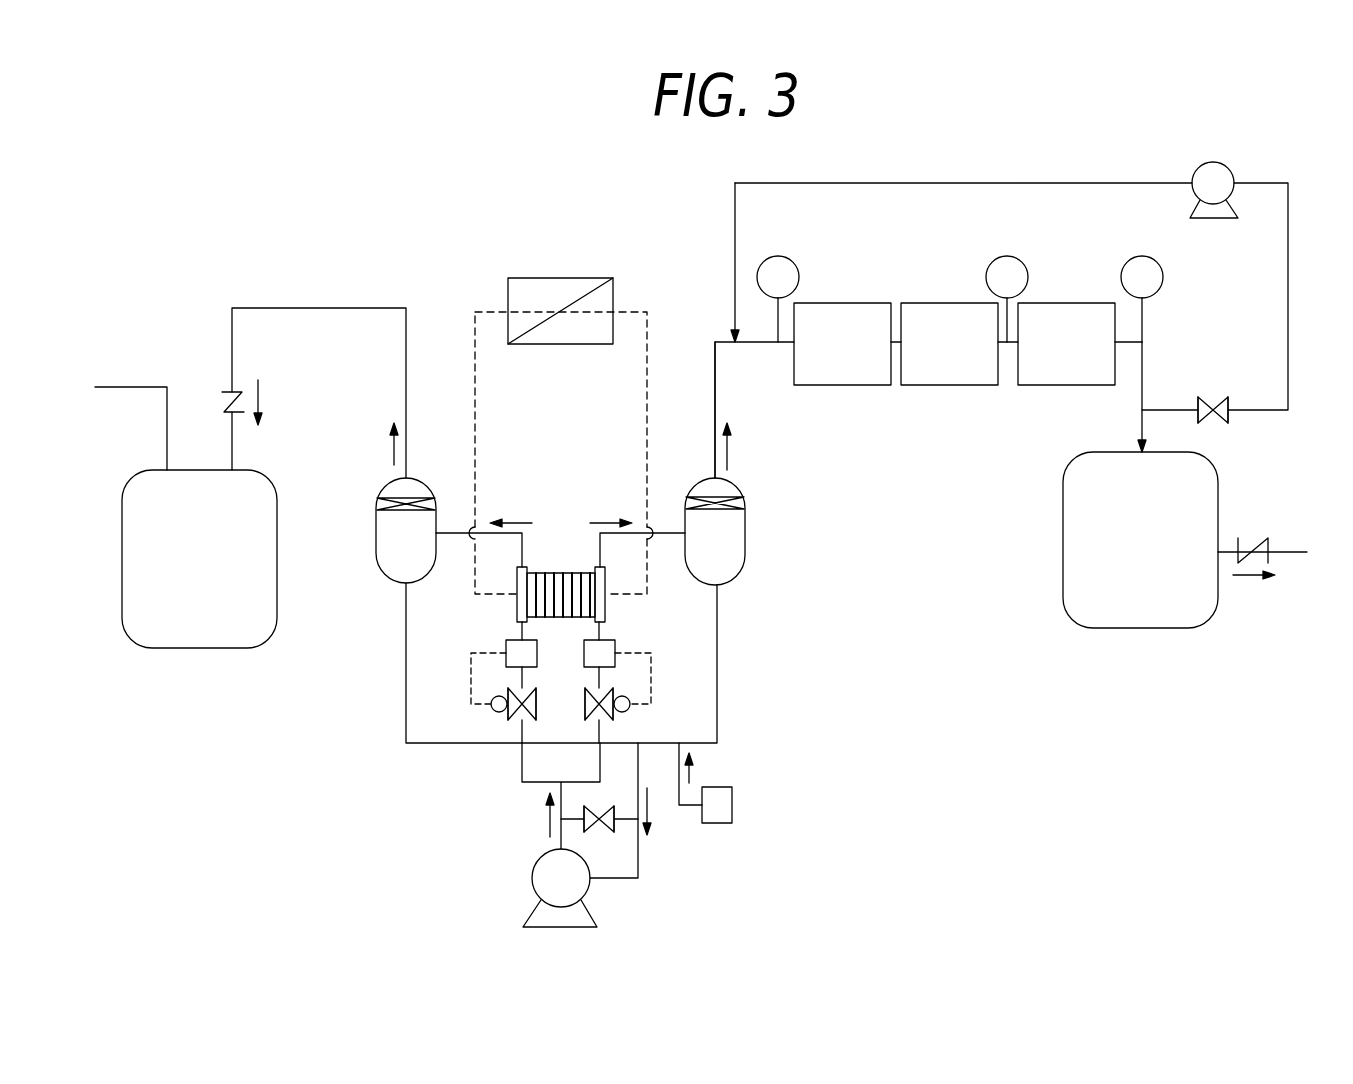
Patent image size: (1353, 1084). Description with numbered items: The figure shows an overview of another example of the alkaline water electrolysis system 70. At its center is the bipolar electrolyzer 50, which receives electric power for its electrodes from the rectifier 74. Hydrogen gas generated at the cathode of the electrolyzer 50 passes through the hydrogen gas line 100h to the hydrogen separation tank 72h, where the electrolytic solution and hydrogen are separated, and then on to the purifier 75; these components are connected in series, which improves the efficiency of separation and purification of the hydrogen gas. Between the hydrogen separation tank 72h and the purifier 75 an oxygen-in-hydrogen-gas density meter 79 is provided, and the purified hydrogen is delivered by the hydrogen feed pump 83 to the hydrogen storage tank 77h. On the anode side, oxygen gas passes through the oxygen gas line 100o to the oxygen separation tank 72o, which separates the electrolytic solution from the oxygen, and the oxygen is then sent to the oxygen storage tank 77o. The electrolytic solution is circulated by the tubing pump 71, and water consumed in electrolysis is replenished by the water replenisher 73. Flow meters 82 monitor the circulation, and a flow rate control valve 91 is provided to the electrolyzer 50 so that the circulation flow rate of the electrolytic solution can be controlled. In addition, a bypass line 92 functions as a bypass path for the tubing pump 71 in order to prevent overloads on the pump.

The alkaline water electrolysis system 70 is at (350, 212).
The tubing pump 71 is at (532, 878).
The oxygen separation tank 72o is at (449, 530).
The hydrogen separation tank 72h is at (672, 531).
The water replenisher 73 is at (732, 805).
The rectifier 74 is at (558, 278).
The purifier 75 is at (978, 320).
The oxygen storage tank 77o is at (186, 517).
The hydrogen storage tank 77h is at (1185, 540).
The oxygen-in-hydrogen-gas density meter 79 is at (796, 266).
The flow meter 82 is at (512, 640).
The hydrogen feed pump 83 is at (1213, 162).
The flow rate control valve 91 is at (466, 637).
The bypass line 92 is at (627, 820).
The bipolar electrolyzer 50 is at (560, 568).
The oxygen gas line 100o is at (232, 343).
The hydrogen gas line 100h is at (716, 397).